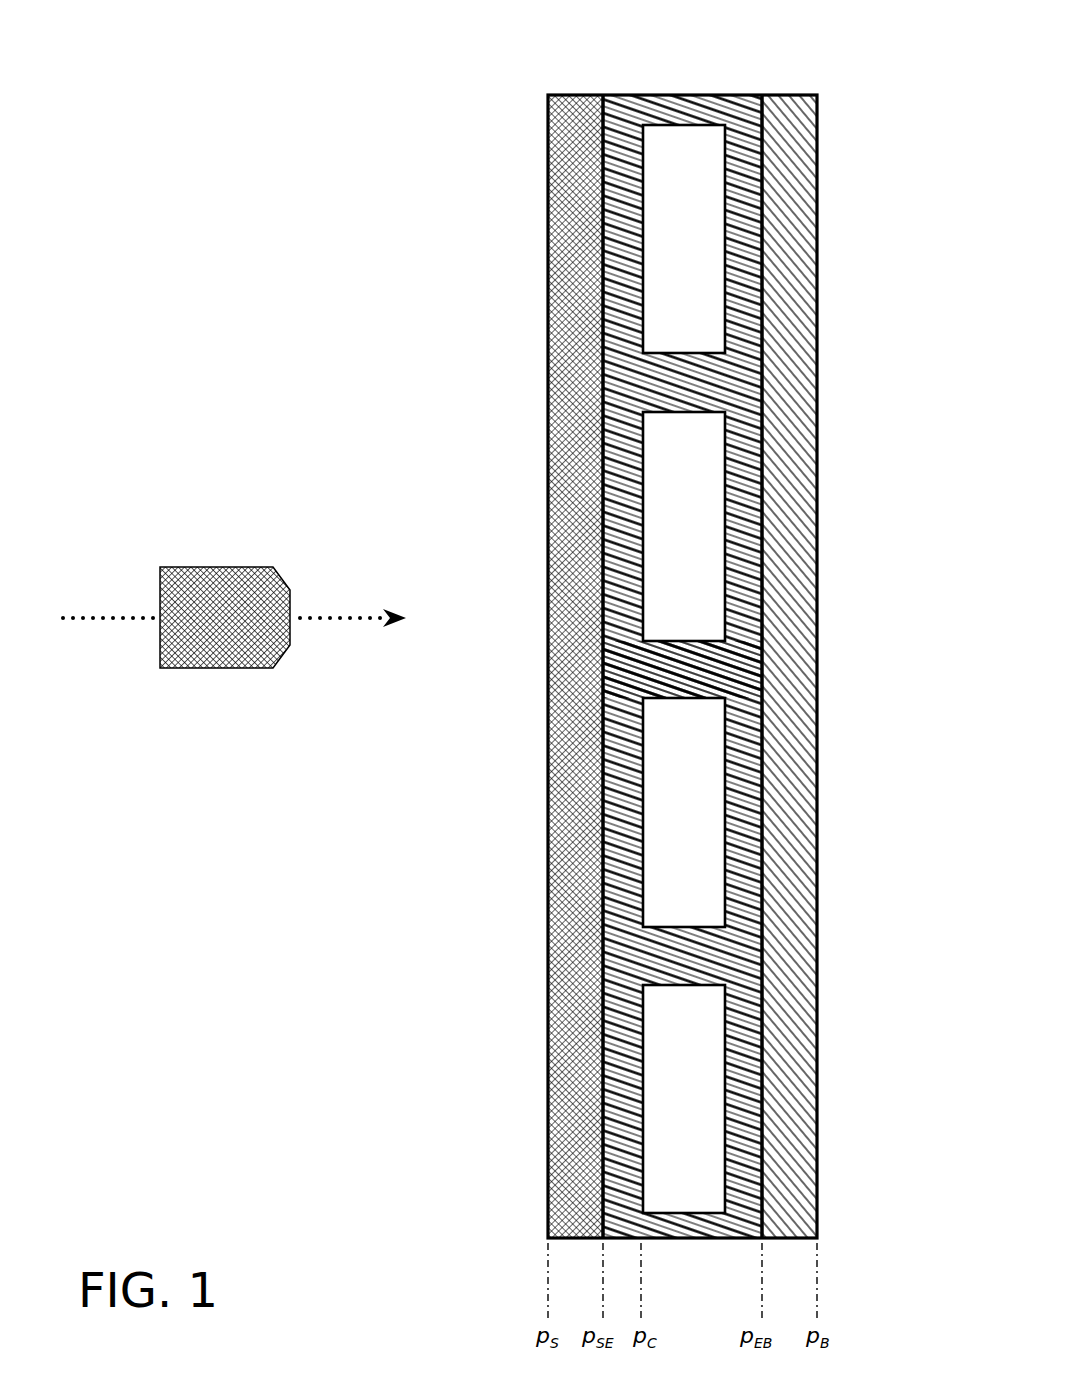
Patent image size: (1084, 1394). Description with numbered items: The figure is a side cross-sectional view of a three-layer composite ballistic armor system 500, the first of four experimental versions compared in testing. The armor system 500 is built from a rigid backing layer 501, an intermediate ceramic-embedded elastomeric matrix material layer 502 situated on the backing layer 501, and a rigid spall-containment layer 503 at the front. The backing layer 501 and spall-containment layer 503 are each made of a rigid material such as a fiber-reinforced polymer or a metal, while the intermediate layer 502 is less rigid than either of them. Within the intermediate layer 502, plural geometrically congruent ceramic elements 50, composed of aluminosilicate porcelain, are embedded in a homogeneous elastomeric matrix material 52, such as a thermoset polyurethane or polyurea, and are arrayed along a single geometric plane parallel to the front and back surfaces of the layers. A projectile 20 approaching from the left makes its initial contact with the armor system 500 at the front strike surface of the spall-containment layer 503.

The projectile 20 is at (233, 558).
The ceramic elements 50 is at (690, 237).
The elastomeric matrix material 52 is at (690, 667).
The composite ballistic armor system 500 is at (300, 294).
The backing layer 501 is at (817, 80).
The ceramic-embedded elastomeric matrix material layer 502 is at (755, 627).
The spall-containment layer 503 is at (603, 80).